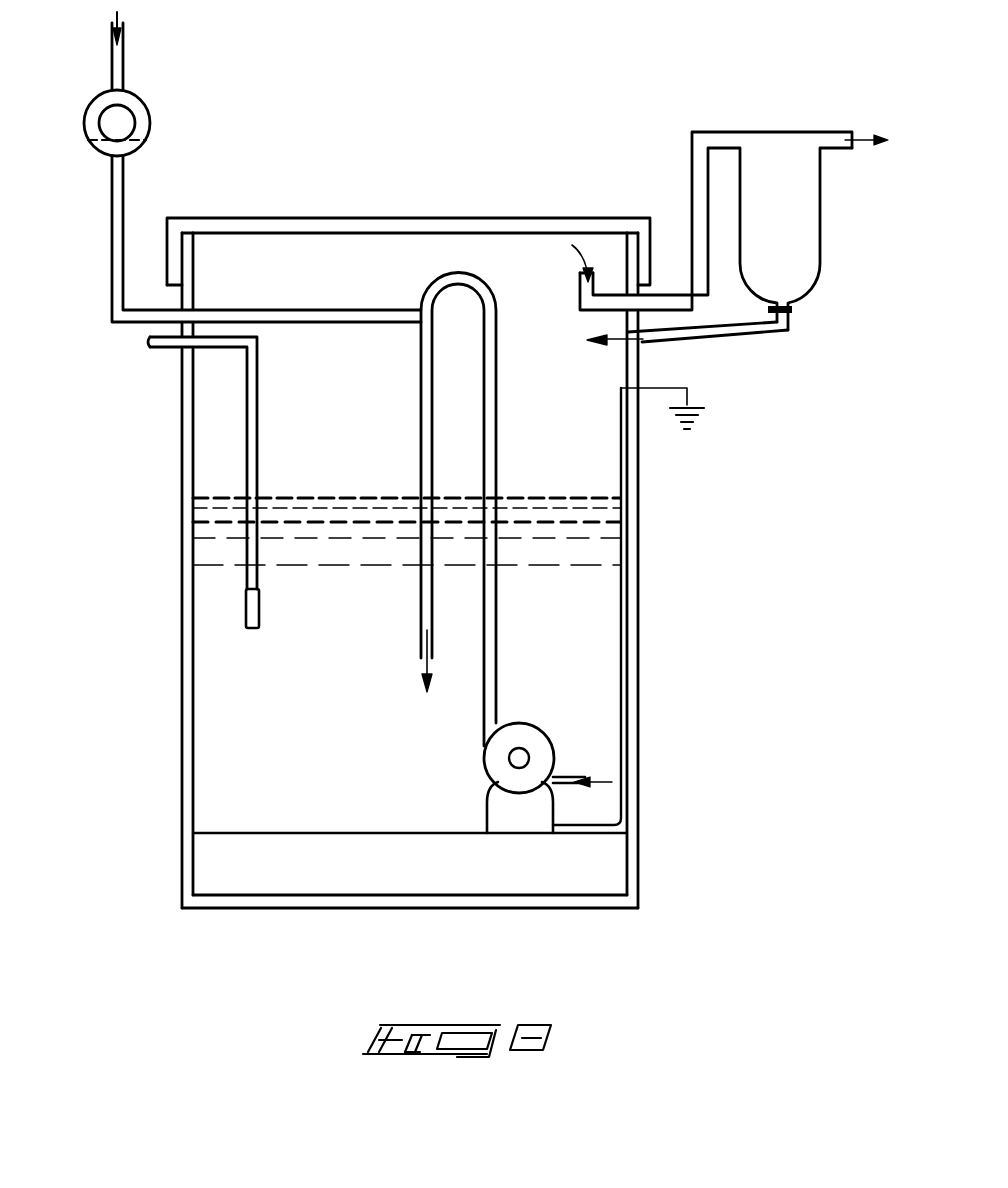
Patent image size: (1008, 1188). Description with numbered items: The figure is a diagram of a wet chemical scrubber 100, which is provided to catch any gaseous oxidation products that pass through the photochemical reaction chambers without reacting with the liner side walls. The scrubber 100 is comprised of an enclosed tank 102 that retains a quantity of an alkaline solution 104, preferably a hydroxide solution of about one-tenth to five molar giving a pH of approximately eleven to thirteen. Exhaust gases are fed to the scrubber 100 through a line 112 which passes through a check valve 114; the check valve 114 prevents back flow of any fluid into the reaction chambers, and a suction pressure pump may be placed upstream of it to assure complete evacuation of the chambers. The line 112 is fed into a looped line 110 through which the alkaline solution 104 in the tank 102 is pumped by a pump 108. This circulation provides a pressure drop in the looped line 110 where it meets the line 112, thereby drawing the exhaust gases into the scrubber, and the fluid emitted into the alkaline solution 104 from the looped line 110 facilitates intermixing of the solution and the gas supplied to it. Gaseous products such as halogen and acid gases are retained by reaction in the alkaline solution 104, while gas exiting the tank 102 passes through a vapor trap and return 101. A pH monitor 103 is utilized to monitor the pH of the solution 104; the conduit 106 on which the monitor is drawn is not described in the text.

The scrubber 100 is at (522, 120).
The vapor trap and return 101 is at (808, 237).
The tank 102 is at (635, 530).
The pH monitor 103 is at (253, 620).
The alkaline solution 104 is at (527, 518).
The probe conduit 106 is at (255, 438).
The pump 108 is at (525, 732).
The looped line 110 is at (488, 372).
The line 112 is at (120, 62).
The check valve 114 is at (143, 125).